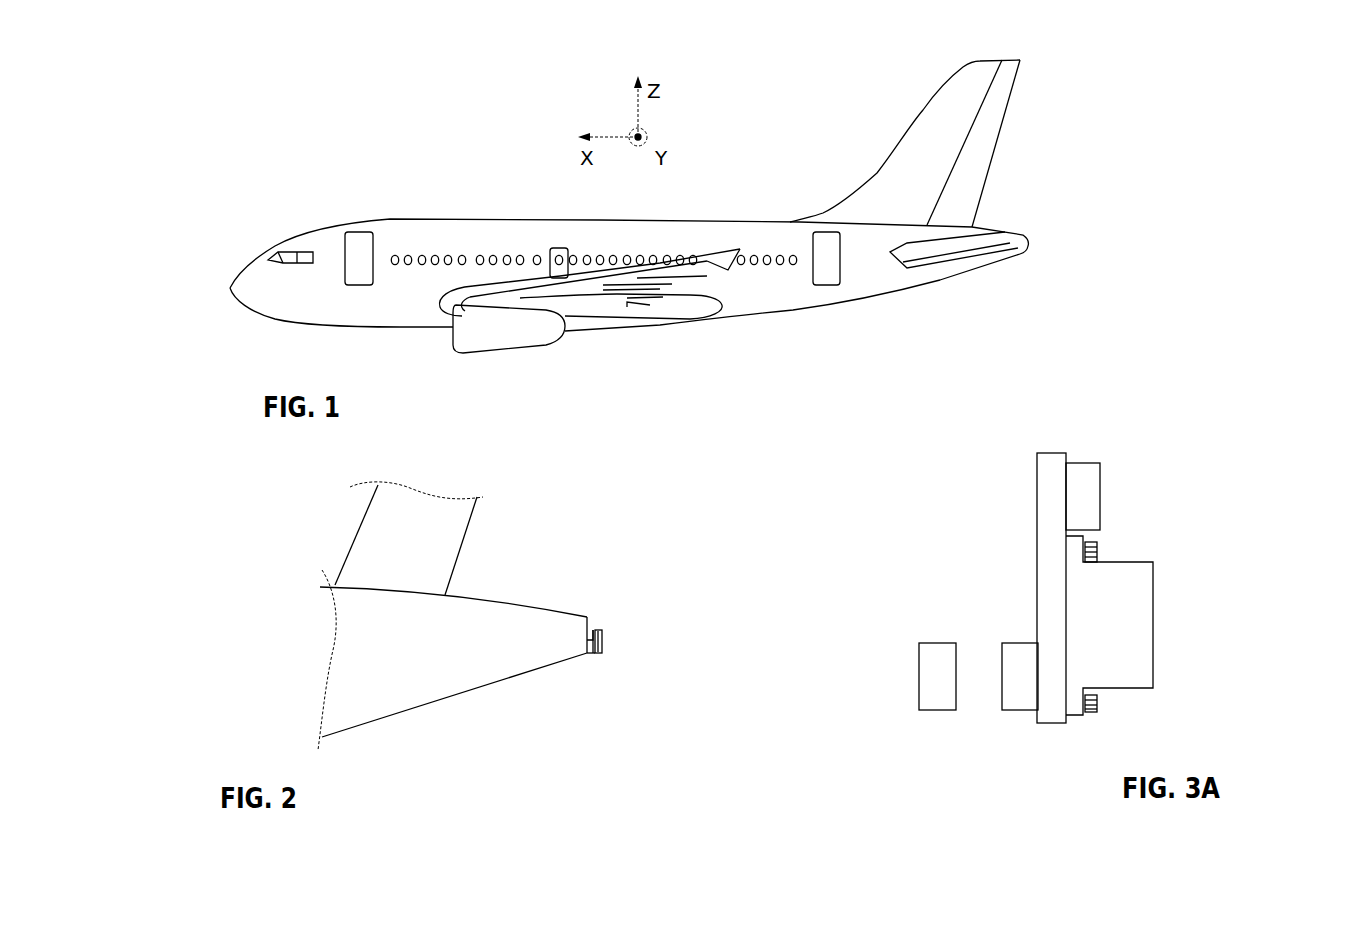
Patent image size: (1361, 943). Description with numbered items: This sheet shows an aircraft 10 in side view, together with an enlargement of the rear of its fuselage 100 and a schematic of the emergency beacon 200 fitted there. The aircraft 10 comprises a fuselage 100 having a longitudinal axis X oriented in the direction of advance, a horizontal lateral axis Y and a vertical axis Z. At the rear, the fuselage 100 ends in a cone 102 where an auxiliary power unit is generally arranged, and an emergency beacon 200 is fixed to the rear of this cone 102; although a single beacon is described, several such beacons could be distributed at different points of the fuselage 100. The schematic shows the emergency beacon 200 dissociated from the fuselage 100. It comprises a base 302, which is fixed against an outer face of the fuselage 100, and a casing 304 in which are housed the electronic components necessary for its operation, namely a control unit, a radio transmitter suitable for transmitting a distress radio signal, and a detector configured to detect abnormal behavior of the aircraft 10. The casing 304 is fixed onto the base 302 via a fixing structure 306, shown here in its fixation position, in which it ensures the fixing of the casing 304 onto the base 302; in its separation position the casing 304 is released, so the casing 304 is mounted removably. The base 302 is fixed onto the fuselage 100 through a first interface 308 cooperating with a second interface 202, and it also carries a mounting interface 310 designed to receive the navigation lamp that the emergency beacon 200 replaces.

In FIG. 1, the aircraft 10 is at (350, 190).
In FIG. 1, the fuselage 100 is at (515, 240).
In FIG. 2, the fuselage 100 is at (363, 650).
In FIG. 1, the cone 102 is at (1080, 218).
In FIG. 2, the cone 102 is at (580, 542).
In FIG. 2, the emergency beacon 200 is at (608, 652).
In FIG. 3A, the emergency beacon 200 is at (1147, 435).
In FIG. 2, the second interface 202 is at (585, 658).
In FIG. 3A, the second interface 202 is at (920, 675).
In FIG. 3A, the base 302 is at (1054, 463).
In FIG. 3A, the casing 304 is at (1128, 632).
In FIG. 3A, the fixing structure 306 is at (1097, 552).
In FIG. 3A, the first interface 308 is at (1023, 712).
In FIG. 3A, the mounting interface 310 is at (1083, 485).